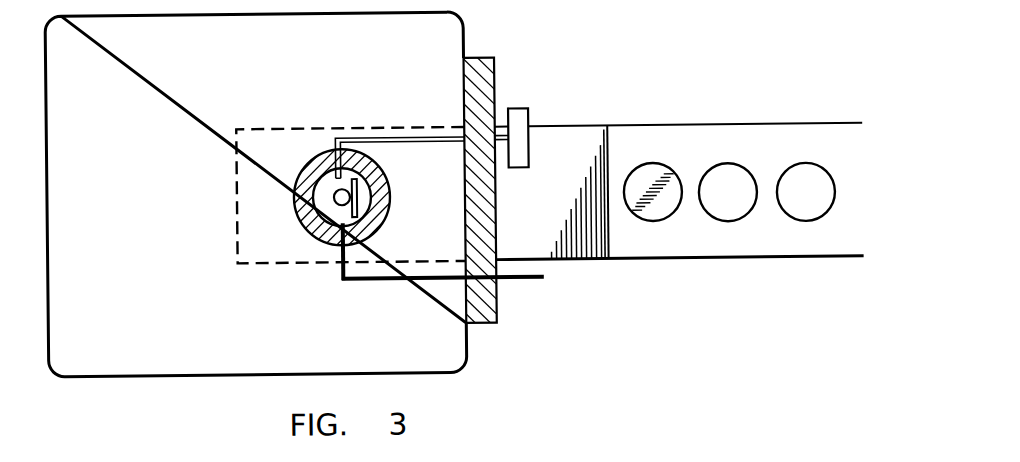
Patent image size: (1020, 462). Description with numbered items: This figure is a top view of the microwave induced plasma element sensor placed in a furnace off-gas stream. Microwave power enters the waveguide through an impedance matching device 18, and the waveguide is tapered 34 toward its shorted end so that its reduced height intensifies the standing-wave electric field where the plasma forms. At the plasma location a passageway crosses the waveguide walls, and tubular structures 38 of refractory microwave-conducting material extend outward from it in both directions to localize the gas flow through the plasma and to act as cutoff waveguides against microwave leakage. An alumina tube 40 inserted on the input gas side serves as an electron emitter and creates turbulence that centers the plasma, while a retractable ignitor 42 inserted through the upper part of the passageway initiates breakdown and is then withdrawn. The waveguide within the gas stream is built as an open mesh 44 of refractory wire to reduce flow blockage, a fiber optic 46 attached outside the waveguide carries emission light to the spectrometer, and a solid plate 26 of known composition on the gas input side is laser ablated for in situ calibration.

The impedance matching device 18 is at (649, 167).
The solid plate 26 is at (347, 237).
The waveguide taper 34 is at (560, 126).
The tubular structures 38 is at (294, 195).
The alumina tube 40 is at (328, 212).
The retractable ignitor 42 is at (352, 136).
The open mesh waveguide 44 is at (238, 128).
The fiber optic 46 is at (523, 280).